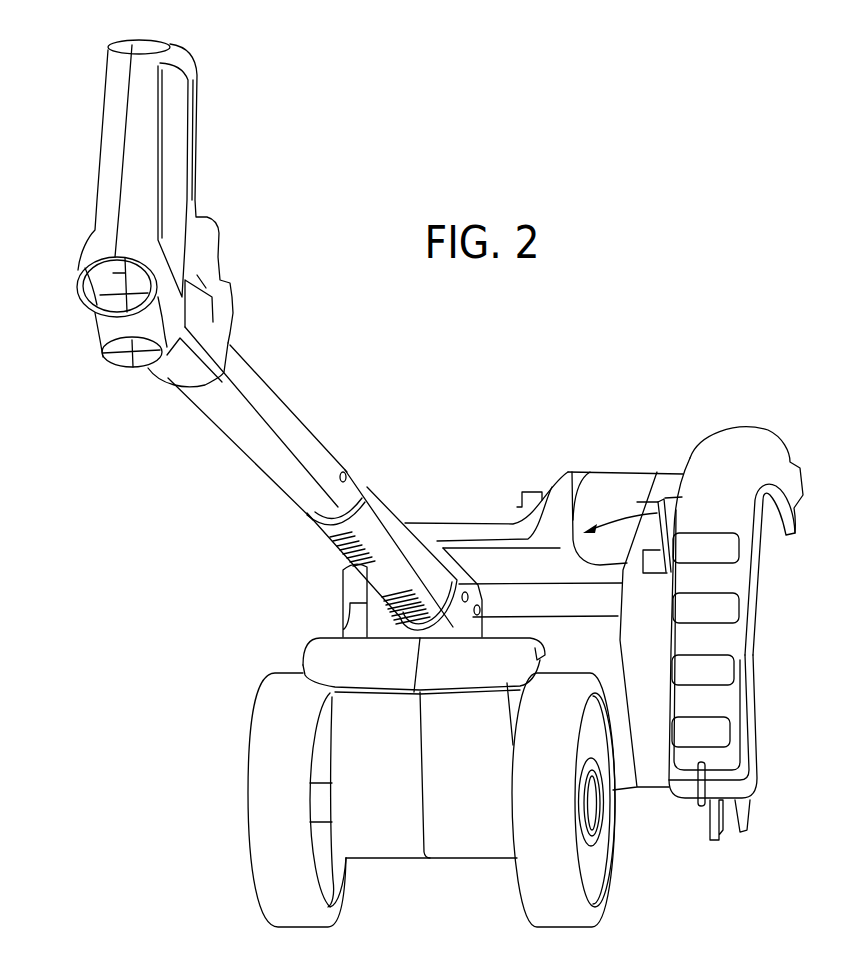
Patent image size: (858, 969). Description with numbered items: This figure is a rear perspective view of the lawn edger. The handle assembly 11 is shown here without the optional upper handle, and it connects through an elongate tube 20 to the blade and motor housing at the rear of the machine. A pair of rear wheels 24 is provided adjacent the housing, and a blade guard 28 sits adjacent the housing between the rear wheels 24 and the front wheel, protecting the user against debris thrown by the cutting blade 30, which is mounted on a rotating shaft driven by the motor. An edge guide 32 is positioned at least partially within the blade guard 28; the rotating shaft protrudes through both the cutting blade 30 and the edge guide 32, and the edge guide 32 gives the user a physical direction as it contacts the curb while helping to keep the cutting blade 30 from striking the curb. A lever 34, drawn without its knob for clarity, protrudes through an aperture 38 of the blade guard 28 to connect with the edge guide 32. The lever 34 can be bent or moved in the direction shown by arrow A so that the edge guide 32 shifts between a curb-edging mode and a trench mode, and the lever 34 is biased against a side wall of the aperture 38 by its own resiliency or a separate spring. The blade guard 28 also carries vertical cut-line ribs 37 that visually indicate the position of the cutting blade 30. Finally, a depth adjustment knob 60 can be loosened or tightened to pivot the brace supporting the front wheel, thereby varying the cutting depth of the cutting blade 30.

The handle assembly 11 is at (232, 154).
The elongate tube 20 is at (297, 400).
The rear wheels 24 is at (248, 835).
The blade guard 28 is at (750, 620).
The cutting blade 30 is at (747, 803).
The edge guide 32 is at (721, 835).
The lever 34 is at (662, 500).
The vertical cut-line ribs 37 is at (702, 790).
The aperture 38 is at (572, 472).
The depth adjustment knob 60 is at (517, 500).
The arrow A is at (605, 520).